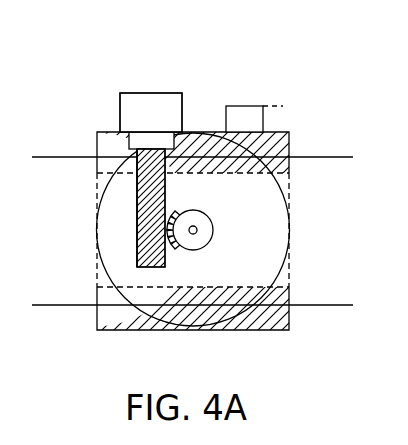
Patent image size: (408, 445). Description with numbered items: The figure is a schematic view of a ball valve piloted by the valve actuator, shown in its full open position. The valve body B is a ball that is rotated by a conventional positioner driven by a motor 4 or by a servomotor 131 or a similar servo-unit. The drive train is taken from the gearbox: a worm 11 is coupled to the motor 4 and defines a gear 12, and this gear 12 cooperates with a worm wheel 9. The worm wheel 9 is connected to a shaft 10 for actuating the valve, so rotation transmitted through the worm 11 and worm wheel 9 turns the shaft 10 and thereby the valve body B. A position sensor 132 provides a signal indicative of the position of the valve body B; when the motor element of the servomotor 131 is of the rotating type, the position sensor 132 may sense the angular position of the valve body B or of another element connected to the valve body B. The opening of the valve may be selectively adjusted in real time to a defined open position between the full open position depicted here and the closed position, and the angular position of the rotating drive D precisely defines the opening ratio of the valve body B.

The servomotor 131 is at (146, 108).
The motor 4 is at (146, 108).
The position sensor 132 is at (140, 140).
The shaft 10 is at (196, 224).
The gear 12 is at (165, 226).
The worm 11 is at (137, 247).
The worm wheel 9 is at (210, 244).
The rotating drive D is at (204, 227).
The valve body B is at (217, 307).